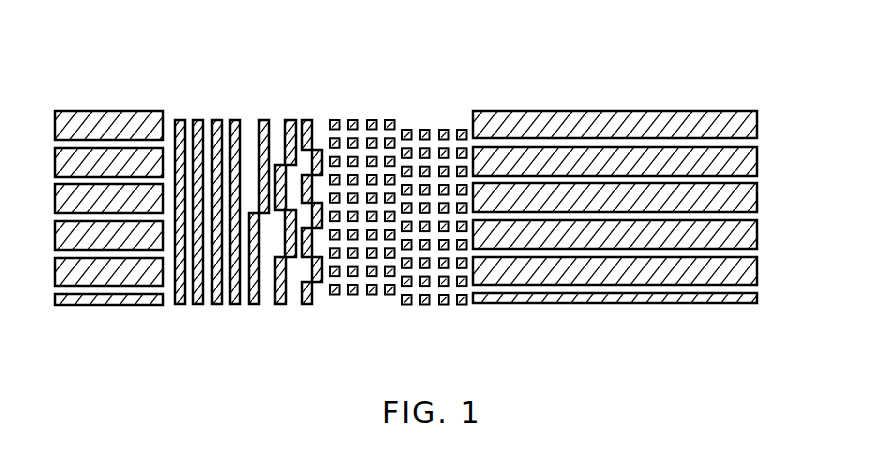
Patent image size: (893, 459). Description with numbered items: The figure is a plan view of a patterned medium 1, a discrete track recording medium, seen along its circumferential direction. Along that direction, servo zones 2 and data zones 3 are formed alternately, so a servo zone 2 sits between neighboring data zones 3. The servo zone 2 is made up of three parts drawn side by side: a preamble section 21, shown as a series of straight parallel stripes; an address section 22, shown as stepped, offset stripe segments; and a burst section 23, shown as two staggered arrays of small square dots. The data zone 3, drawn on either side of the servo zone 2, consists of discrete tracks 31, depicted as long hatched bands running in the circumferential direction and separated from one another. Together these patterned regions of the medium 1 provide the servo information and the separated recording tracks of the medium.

The patterned medium 1 is at (157, 75).
The servo zone 2 is at (465, 98).
The data zone 3 is at (755, 98).
The preamble section 21 is at (240, 314).
The address section 22 is at (322, 314).
The burst section 23 is at (467, 314).
The discrete track 31 is at (757, 128).